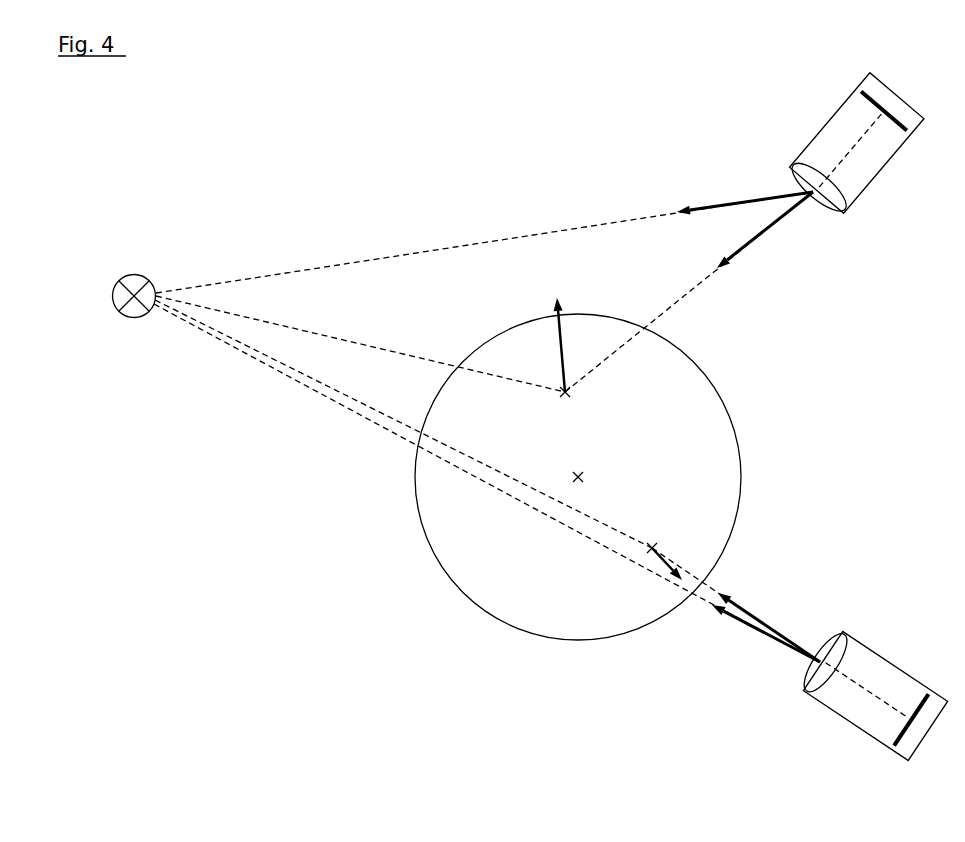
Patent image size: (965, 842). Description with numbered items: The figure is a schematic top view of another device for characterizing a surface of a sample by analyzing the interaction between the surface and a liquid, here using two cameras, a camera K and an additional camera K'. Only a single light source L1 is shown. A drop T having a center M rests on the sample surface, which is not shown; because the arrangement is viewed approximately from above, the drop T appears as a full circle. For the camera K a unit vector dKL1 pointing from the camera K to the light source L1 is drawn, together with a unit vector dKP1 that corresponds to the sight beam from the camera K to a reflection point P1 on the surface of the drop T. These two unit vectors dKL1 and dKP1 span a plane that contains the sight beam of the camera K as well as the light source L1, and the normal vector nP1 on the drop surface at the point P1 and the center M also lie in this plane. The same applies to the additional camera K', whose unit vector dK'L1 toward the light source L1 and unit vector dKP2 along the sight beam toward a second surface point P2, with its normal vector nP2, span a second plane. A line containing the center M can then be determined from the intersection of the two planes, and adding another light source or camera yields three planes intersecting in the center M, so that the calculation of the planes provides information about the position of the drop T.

The light source L1 is at (134, 281).
The camera K is at (857, 146).
The additional camera K' is at (872, 692).
The drop T is at (733, 416).
The center M is at (588, 476).
The point on the surface of the drop P1 is at (565, 393).
The point on the surface of the drop P2 is at (653, 546).
The normal vector nP1 is at (562, 342).
The normal vector nP2 is at (660, 556).
The unit vector from the camera K to the light source L1 dKL1 is at (745, 194).
The unit vector corresponding to the sight beam from the camera K to reflection poin dKP1 is at (765, 233).
The unit vector corresponding to the sight beam from the camera K' to point P2 dKP2 is at (769, 623).
The unit vector from the camera K' to the light source L1 dK'L1 is at (765, 633).